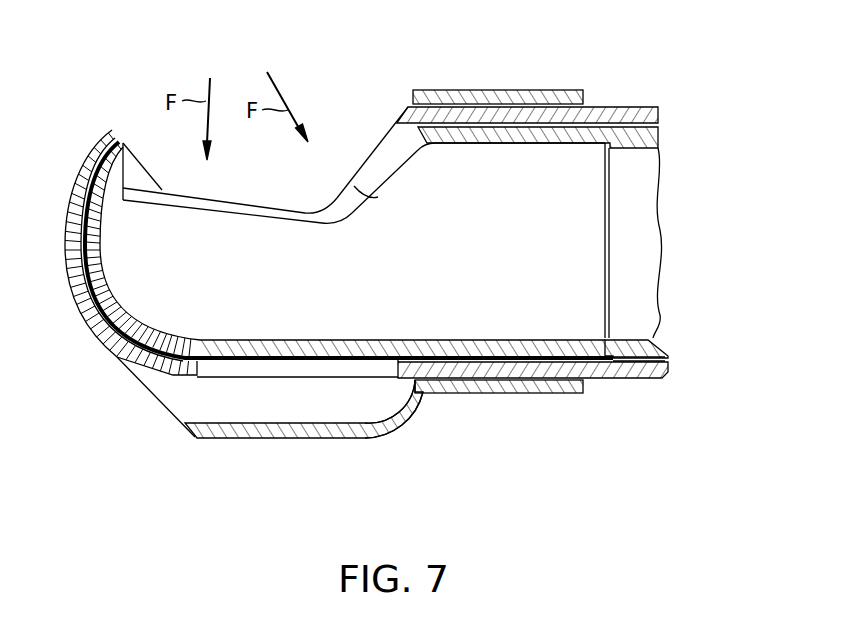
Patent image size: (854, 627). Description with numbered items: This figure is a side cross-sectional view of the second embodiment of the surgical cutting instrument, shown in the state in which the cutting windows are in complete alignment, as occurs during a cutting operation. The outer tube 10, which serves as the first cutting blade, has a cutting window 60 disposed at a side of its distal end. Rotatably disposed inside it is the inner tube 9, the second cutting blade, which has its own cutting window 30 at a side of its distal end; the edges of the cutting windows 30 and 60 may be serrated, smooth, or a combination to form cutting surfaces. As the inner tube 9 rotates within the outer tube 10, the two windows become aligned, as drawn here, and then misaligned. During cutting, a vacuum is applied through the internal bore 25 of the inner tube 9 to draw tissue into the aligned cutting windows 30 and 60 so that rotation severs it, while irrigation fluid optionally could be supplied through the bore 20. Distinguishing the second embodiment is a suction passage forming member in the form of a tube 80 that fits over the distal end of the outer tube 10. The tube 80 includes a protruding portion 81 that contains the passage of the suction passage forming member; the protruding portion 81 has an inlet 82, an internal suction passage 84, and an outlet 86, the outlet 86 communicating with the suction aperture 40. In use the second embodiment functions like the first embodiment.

The inner tube 9 is at (650, 137).
The outer tube 10 is at (623, 107).
The bore 20 is at (668, 357).
The internal bore 25 is at (583, 362).
The cutting window 30 is at (357, 187).
The suction aperture 40 is at (208, 362).
The cutting window 60 is at (382, 138).
The tube 80 is at (497, 90).
The protruding portion 81 is at (294, 439).
The inlet 82 is at (150, 395).
The internal suction passage 84 is at (293, 408).
The outlet 86 is at (401, 398).